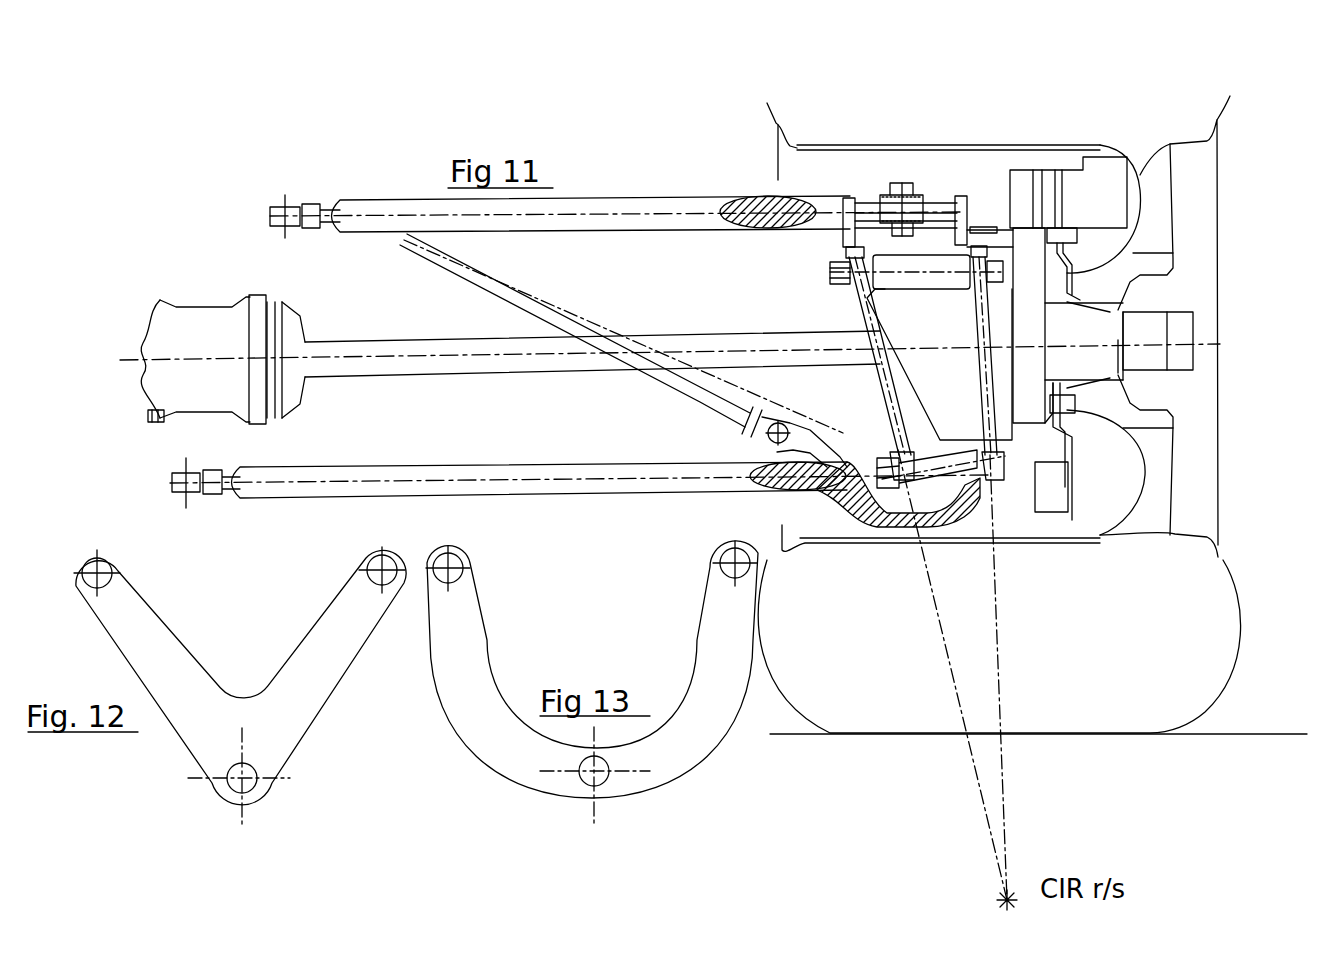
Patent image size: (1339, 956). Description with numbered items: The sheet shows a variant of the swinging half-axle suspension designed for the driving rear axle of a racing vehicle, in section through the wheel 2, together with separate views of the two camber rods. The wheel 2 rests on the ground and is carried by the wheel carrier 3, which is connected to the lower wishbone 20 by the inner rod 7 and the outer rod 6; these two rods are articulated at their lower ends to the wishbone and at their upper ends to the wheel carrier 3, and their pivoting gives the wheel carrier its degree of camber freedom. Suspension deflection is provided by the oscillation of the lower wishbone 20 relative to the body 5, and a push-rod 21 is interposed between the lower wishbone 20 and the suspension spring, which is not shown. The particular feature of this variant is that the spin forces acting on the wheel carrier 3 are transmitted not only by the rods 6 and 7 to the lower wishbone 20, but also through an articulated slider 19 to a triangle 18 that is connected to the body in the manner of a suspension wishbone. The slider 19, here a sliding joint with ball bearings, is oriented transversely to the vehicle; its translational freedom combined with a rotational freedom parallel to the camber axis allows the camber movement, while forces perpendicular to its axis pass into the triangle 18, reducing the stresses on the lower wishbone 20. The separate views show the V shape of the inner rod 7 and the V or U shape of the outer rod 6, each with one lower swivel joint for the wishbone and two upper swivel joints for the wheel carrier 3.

In FIG. 11, the wheel 2 is at (1160, 262).
In FIG. 11, the wheel carrier 3 is at (918, 322).
In FIG. 11, the body 5 is at (1253, 733).
In FIG. 11, the outer rod 6 is at (986, 338).
In FIG. 13, the outer rod 6 is at (708, 660).
In FIG. 11, the inner rod 7 is at (855, 298).
In FIG. 12, the inner rod 7 is at (312, 648).
In FIG. 11, the triangle 18 is at (655, 220).
In FIG. 11, the articulated slider 19 is at (878, 184).
In FIG. 11, the lower wishbone 20 is at (430, 470).
In FIG. 11, the push-rod 21 is at (562, 312).